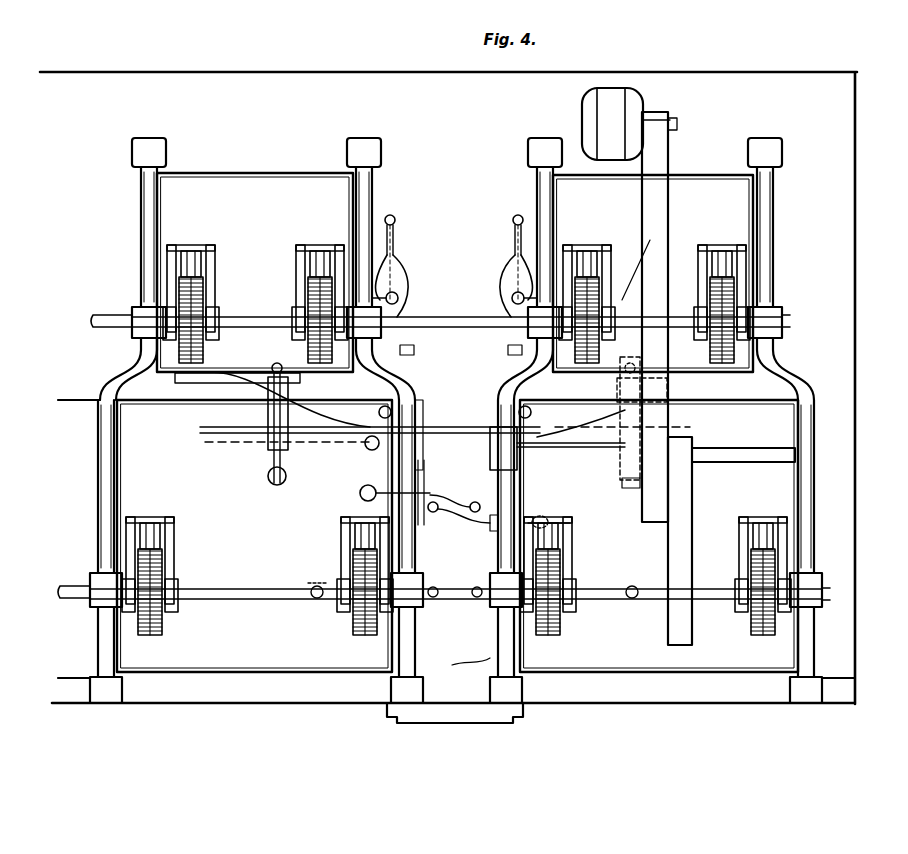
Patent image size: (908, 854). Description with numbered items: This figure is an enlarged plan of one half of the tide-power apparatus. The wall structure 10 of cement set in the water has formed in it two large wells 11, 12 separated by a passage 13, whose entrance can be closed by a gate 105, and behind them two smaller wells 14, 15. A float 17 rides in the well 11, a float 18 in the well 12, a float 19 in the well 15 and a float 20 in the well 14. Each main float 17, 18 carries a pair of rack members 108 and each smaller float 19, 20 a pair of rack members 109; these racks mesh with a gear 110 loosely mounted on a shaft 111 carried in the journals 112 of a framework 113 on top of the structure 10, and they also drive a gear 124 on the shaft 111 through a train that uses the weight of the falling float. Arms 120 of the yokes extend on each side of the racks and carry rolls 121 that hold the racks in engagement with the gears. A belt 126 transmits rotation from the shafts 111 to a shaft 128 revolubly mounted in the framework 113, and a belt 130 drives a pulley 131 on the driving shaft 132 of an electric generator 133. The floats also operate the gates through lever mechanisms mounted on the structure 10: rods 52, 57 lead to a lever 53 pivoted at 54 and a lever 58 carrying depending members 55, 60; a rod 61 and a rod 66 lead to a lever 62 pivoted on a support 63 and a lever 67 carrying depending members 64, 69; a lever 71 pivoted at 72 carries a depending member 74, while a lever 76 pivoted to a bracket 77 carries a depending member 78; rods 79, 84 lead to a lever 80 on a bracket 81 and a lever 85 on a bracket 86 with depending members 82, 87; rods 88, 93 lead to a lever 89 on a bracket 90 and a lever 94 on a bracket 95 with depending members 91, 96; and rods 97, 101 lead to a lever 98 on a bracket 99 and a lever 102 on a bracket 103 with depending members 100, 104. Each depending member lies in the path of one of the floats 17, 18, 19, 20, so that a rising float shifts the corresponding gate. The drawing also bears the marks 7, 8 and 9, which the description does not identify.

The wall structure 10 is at (347, 72).
The framework 113 is at (140, 192).
The journals 112 is at (132, 312).
The shaft 111 is at (252, 322).
The rolls 121 is at (194, 245).
The arms 120 is at (212, 280).
The rack members 109 is at (181, 270).
The rack members 108 is at (140, 547).
The gear 124 is at (204, 350).
The gear 110 is at (140, 352).
The float 20 is at (262, 178).
The float 19 is at (696, 190).
The float 17 is at (253, 660).
The float 18 is at (680, 664).
The well 11 is at (300, 675).
The well 12 is at (605, 675).
The well 14 is at (223, 172).
The well 15 is at (757, 212).
The belt 130 is at (660, 209).
The belt 126 is at (692, 497).
The shaft 128 is at (730, 452).
The electric generator 133 is at (638, 100).
The pulley 131 is at (672, 118).
The driving shaft 132 is at (678, 124).
The depending member 91 is at (625, 263).
The rod 84 is at (237, 385).
The rod 79 is at (272, 373).
The lever 80 is at (282, 462).
The bracket 81 is at (268, 430).
The depending member 82 is at (286, 484).
The line 9 is at (451, 436).
The lever 85 is at (455, 426).
The depending member 87 is at (417, 404).
The bracket 86 is at (423, 412).
The depending member 104 is at (378, 412).
The depending member 96 is at (532, 413).
The bracket 103 is at (419, 345).
The bracket 95 is at (510, 352).
The depending member 78 is at (365, 446).
The bracket 77 is at (490, 452).
The depending member 64 is at (395, 486).
The support 63 is at (422, 476).
The lever 62 is at (450, 490).
The rod 61 is at (468, 496).
The rod 52 is at (433, 513).
The lever 53 is at (462, 532).
The pivot 54 is at (490, 528).
The depending member 55 is at (542, 516).
The line 8 is at (350, 490).
The depending member 69 is at (588, 588).
The pin 7 is at (312, 595).
The depending member 60 is at (318, 582).
The lever 58 is at (318, 604).
The rod 57 is at (433, 598).
The rod 66 is at (476, 598).
The lever 67 is at (471, 650).
The gate 105 is at (440, 718).
The passage 13 is at (392, 732).
The lever 71 is at (622, 470).
The pivot 72 is at (622, 432).
The depending member 74 is at (624, 496).
The lever 76 is at (660, 375).
The depending member 100 is at (305, 300).
The rod 101 is at (403, 214).
The lever 102 is at (396, 235).
The lever 98 is at (402, 290).
The bracket 99 is at (384, 285).
The rod 97 is at (400, 296).
The rod 93 is at (506, 208).
The lever 94 is at (514, 238).
The bracket 90 is at (508, 278).
The rod 88 is at (511, 296).
The lever 89 is at (500, 302).